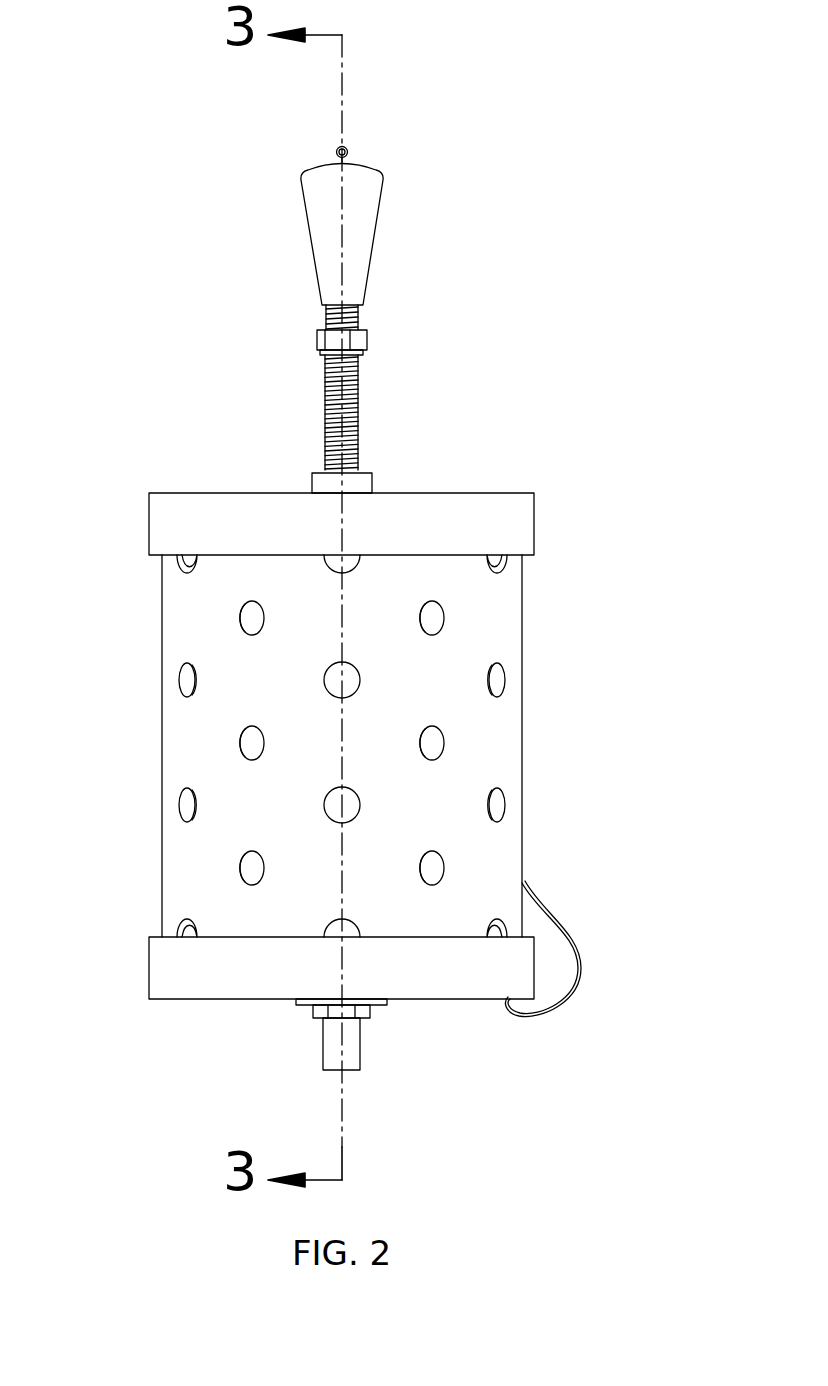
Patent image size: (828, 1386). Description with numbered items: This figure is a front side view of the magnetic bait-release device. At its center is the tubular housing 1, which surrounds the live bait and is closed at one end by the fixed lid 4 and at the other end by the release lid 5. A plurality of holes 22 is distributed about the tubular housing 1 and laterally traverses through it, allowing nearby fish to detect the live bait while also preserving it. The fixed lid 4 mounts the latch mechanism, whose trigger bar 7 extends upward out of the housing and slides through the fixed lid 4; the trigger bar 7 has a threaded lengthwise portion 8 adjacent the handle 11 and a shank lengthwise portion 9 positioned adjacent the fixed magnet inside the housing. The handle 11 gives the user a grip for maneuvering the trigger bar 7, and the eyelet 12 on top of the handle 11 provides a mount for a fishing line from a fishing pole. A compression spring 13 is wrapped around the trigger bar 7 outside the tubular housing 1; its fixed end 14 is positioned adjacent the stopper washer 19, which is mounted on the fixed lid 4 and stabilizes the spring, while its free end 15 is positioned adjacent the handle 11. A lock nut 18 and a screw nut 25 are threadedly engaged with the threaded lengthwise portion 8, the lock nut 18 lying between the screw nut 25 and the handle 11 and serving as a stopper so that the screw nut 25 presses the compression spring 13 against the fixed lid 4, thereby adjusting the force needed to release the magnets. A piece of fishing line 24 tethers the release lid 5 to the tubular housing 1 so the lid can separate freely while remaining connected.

The tubular housing 1 is at (545, 724).
The fixed lid 4 is at (528, 512).
The release lid 5 is at (150, 970).
The trigger bar 7 is at (368, 414).
The threaded lengthwise portion 8 is at (360, 364).
The shank lengthwise portion 9 is at (358, 464).
The handle 11 is at (310, 222).
The eyelet 12 is at (337, 153).
The compression spring 13 is at (322, 429).
The fixed end 14 is at (322, 378).
The free end 15 is at (328, 468).
The lock nut 18 is at (330, 328).
The stopper washer 19 is at (316, 480).
The plurality of holes 22 is at (183, 682).
The piece of fishing line 24 is at (578, 960).
The screw nut 25 is at (322, 356).